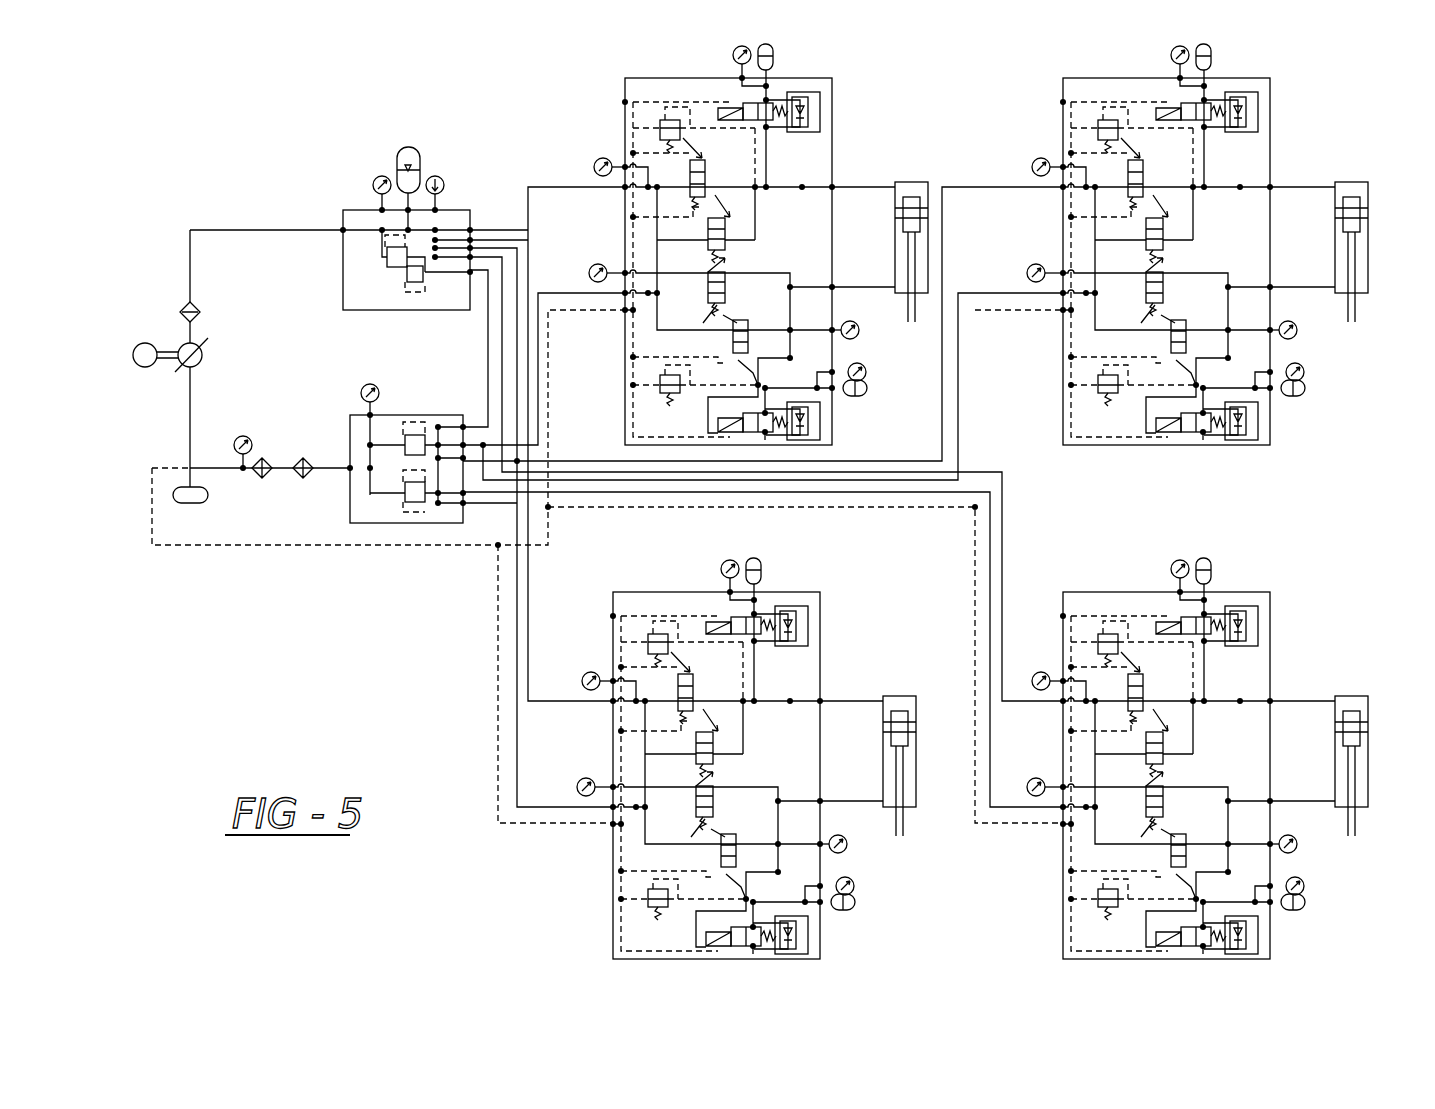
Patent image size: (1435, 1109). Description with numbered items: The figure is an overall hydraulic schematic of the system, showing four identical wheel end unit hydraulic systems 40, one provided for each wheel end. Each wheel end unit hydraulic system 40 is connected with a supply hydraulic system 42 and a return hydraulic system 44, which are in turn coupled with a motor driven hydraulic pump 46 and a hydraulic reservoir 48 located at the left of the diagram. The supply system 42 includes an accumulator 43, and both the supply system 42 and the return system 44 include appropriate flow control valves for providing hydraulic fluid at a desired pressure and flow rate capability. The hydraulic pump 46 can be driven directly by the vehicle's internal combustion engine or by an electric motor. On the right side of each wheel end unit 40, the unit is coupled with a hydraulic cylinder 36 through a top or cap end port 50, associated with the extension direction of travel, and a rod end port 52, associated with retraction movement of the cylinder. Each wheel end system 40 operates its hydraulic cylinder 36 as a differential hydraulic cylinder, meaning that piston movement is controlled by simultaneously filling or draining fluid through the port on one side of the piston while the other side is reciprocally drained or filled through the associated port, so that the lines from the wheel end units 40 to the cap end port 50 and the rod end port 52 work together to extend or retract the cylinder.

The hydraulic cylinder 36 is at (1365, 257).
The wheel end unit hydraulic system 40 is at (832, 110).
The supply hydraulic system 42 is at (343, 212).
The accumulator 43 is at (408, 142).
The return hydraulic system 44 is at (348, 500).
The motor driven hydraulic pump 46 is at (200, 348).
The hydraulic reservoir 48 is at (212, 467).
The top or cap end port 50 is at (1332, 185).
The rod end port 52 is at (1330, 290).